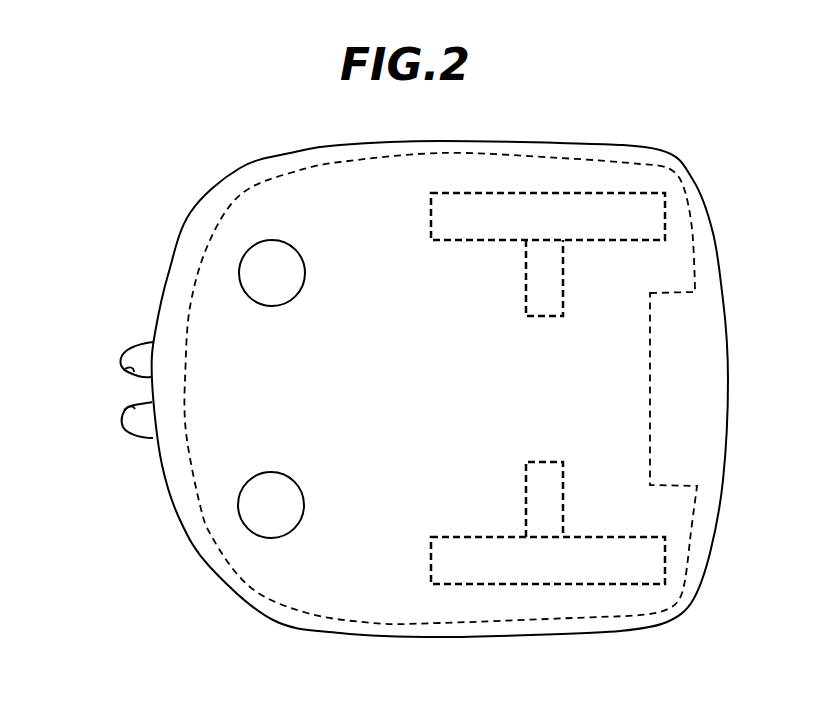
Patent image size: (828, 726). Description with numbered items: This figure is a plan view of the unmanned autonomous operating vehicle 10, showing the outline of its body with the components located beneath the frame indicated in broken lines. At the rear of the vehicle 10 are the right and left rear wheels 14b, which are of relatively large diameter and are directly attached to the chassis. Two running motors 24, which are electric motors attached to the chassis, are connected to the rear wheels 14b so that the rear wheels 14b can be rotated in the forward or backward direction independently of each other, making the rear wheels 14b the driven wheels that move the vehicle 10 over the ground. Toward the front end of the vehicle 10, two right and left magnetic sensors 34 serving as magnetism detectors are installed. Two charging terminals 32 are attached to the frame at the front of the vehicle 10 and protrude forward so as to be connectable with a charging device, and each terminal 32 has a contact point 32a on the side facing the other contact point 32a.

The unmanned autonomous operating vehicle 10 is at (665, 139).
The rear wheels 14b is at (470, 535).
The running motors 24 is at (546, 462).
The magnetic sensors 34 is at (272, 306).
The charging terminals 32 is at (121, 353).
The contact point 32a is at (128, 376).